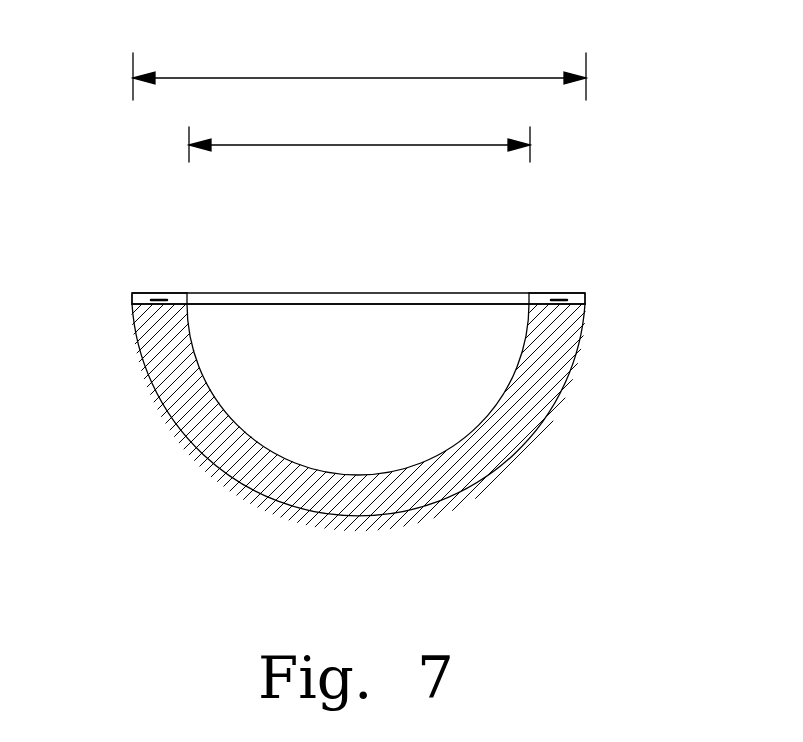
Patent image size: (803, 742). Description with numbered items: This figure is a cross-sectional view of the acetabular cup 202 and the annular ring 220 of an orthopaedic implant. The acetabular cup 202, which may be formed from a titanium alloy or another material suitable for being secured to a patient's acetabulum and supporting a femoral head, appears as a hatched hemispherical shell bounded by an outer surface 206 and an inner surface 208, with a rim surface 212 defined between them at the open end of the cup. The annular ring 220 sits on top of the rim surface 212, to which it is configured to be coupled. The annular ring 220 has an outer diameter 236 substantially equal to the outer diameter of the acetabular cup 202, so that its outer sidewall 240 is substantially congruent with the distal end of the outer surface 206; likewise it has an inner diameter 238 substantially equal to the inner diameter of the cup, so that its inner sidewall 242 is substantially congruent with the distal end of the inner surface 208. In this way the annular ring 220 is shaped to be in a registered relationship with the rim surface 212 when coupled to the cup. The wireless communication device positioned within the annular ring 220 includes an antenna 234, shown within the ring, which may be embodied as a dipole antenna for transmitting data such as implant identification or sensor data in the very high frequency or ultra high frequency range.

The acetabular cup 202 is at (611, 227).
The outer surface 206 is at (470, 500).
The inner surface 208 is at (275, 452).
The rim surface 212 is at (532, 300).
The annular ring 220 is at (578, 293).
The antenna 234 is at (557, 298).
The outer diameter 236 is at (352, 78).
The inner diameter 238 is at (374, 146).
The outer sidewall 240 is at (587, 305).
The inner sidewall 242 is at (513, 303).